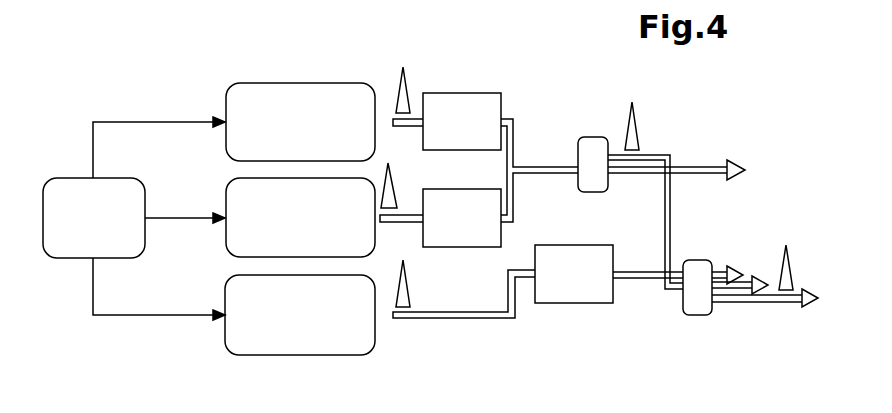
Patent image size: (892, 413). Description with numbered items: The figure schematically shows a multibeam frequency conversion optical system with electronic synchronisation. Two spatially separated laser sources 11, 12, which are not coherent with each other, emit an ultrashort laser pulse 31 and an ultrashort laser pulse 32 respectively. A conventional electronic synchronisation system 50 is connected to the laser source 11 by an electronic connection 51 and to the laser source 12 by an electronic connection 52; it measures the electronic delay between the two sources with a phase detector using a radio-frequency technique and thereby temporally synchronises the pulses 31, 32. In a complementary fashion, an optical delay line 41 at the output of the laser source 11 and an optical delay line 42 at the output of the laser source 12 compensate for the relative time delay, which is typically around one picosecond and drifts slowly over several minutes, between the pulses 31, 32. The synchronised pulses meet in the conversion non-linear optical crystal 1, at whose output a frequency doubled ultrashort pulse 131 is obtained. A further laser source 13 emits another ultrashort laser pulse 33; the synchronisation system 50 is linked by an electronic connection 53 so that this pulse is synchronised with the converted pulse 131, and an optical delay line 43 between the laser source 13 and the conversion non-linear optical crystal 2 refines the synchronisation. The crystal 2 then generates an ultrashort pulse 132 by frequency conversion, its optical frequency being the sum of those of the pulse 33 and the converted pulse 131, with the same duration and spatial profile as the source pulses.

The conversion non-linear optical crystal 1 is at (595, 137).
The conversion non-linear optical crystal 2 is at (693, 317).
The laser source 11 is at (280, 136).
The laser source 12 is at (279, 232).
The laser source 13 is at (279, 329).
The ultrashort laser pulse 31 is at (397, 80).
The ultrashort laser pulse 32 is at (390, 167).
The ultrashort laser pulse 33 is at (407, 282).
The optical delay line 41 is at (446, 136).
The optical delay line 42 is at (446, 232).
The optical delay line 43 is at (558, 287).
The electronic synchronisation system 50 is at (77, 229).
The electronic connection 51 is at (161, 121).
The electronic connection 52 is at (192, 217).
The electronic connection 53 is at (155, 316).
The frequency doubled ultrashort pulse 131 is at (638, 135).
The ultrashort pulse 132 is at (792, 260).